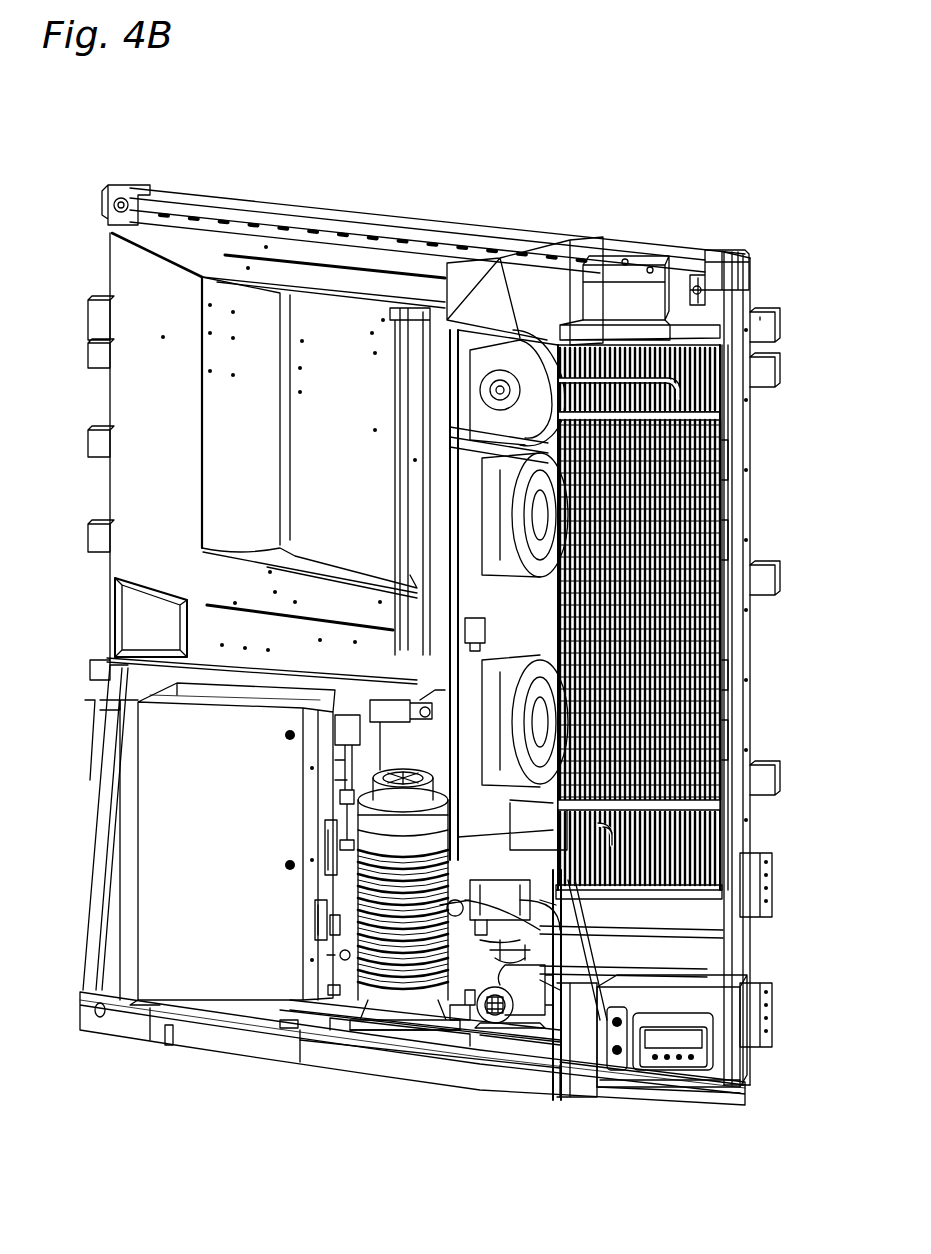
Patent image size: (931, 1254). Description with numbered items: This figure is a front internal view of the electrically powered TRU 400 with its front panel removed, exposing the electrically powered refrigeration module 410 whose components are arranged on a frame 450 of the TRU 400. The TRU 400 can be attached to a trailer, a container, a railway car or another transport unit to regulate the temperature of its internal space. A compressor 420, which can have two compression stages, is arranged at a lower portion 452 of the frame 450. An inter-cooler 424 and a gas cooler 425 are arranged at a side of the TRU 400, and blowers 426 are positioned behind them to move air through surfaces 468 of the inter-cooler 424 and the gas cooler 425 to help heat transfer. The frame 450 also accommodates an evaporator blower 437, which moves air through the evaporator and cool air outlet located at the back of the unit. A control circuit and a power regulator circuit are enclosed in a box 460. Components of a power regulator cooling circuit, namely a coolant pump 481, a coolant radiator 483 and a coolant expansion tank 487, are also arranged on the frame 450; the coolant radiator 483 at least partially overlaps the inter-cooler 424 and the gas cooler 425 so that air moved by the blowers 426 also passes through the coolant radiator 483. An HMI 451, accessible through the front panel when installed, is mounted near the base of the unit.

The TRU 400 is at (684, 128).
The electrically powered refrigeration module 410 is at (500, 212).
The evaporator blower 437 is at (537, 367).
The coolant expansion tank 487 is at (635, 278).
The gas cooler 425 is at (710, 307).
The blowers 426 is at (513, 683).
The surfaces 468 is at (718, 520).
The coolant radiator 483 is at (710, 645).
The frame 450 is at (740, 720).
The inter-cooler 424 is at (717, 830).
The compressor 420 is at (385, 800).
The box 460 is at (172, 810).
The lower portion 452 is at (380, 1040).
The coolant pump 481 is at (502, 1022).
The HMI 451 is at (693, 1063).